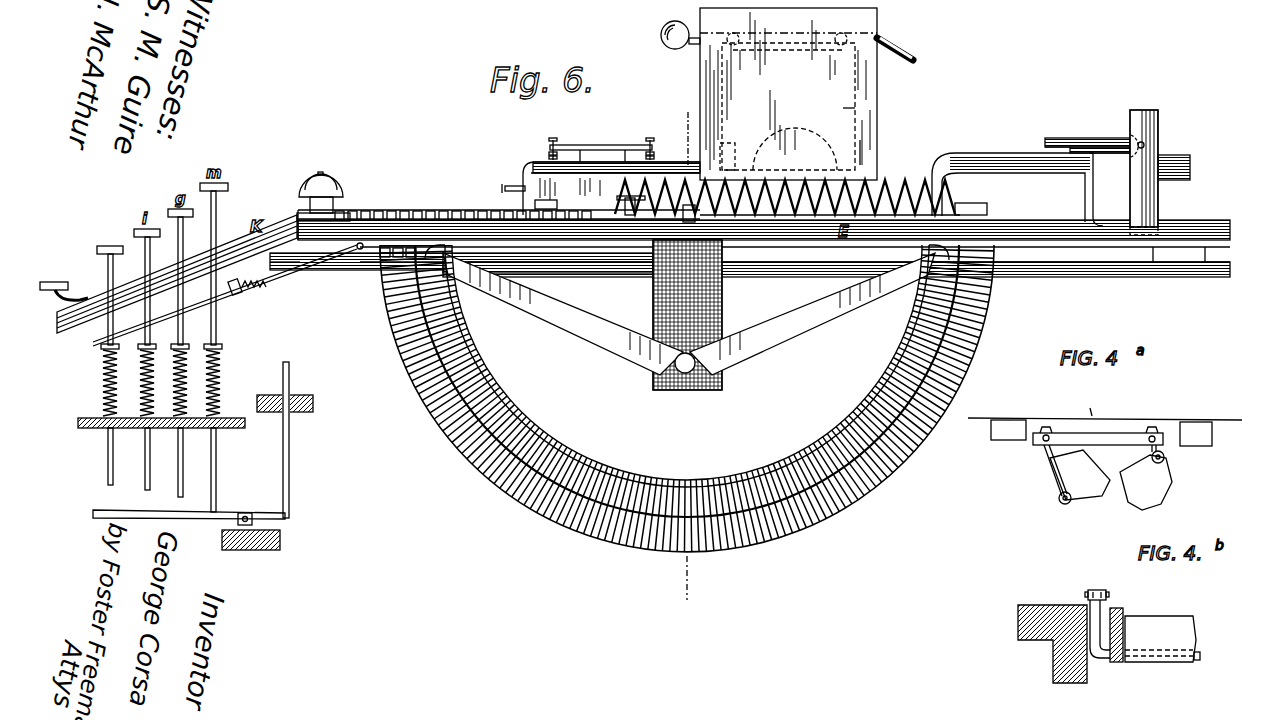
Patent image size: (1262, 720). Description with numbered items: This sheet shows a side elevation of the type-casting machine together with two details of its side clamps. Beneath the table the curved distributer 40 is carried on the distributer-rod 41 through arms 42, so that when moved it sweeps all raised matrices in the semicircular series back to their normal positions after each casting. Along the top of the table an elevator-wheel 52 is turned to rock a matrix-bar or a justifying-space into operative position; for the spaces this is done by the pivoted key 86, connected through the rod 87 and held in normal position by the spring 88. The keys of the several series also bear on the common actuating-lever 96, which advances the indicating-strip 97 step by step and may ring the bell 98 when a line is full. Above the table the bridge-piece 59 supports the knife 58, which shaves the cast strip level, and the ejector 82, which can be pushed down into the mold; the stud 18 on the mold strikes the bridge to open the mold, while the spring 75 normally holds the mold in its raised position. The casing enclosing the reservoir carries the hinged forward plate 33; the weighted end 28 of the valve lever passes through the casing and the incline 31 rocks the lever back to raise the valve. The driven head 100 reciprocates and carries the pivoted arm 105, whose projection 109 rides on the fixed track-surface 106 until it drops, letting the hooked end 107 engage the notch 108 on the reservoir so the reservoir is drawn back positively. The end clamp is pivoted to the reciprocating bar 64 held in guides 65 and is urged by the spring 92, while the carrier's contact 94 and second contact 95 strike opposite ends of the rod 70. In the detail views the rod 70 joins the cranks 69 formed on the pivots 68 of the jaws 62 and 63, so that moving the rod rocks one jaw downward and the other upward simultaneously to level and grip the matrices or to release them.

In FIG. 6, the stud 18 is at (518, 186).
In FIG. 6, the weighted end 28 is at (680, 35).
In FIG. 6, the incline 31 is at (898, 48).
In FIG. 6, the hinged forward plate 33 is at (700, 77).
In FIG. 6, the distributer 40 is at (918, 342).
In FIG. 6, the distributer-rod 41 is at (685, 363).
In FIG. 6, the arms 42 is at (689, 314).
In FIG. 6, the elevator-wheel 52 is at (452, 211).
In FIG. 6, the knife or shaving edge 58 is at (540, 164).
In FIG. 6, the bridge-piece or bracket 59 is at (684, 172).
In FIG. 4A, the side clamp or jaw 62 is at (1077, 472).
In FIG. 4B, the side clamp or jaw 62 is at (1153, 635).
In FIG. 4A, the side clamp or jaw 63 is at (1146, 477).
In FIG. 6, the reciprocating bar 64 is at (693, 222).
In FIG. 6, the guides 65 is at (640, 214).
In FIG. 4A, the pivot 68 is at (1061, 503).
In FIG. 4B, the pivot 68 is at (1201, 658).
In FIG. 4A, the cranks 69 is at (1046, 428).
In FIG. 4B, the cranks 69 is at (1104, 590).
In FIG. 4A, the rod 70 is at (1131, 445).
In FIG. 4B, the rod 70 is at (1090, 590).
In FIG. 6, the spring 75 is at (535, 213).
In FIG. 6, the ejector 82 is at (601, 146).
In FIG. 6, the key 86 is at (68, 286).
In FIG. 6, the rod 87 is at (288, 272).
In FIG. 6, the spring 88 is at (256, 290).
In FIG. 6, the spring 92 is at (766, 213).
In FIG. 4A, the contact 94 is at (1008, 430).
In FIG. 4A, the second contact 95 is at (1196, 434).
In FIG. 6, the actuating-lever 96 is at (189, 512).
In FIG. 6, the indicating-strip 97 is at (334, 204).
In FIG. 6, the bell or sounder 98 is at (333, 184).
In FIG. 6, the driven head 100 is at (1159, 122).
In FIG. 6, the arm 105 is at (1063, 140).
In FIG. 6, the track-surface 106 is at (985, 160).
In FIG. 6, the hooked end 107 is at (1042, 138).
In FIG. 6, the notch 108 is at (858, 156).
In FIG. 6, the projection 109 is at (1092, 153).